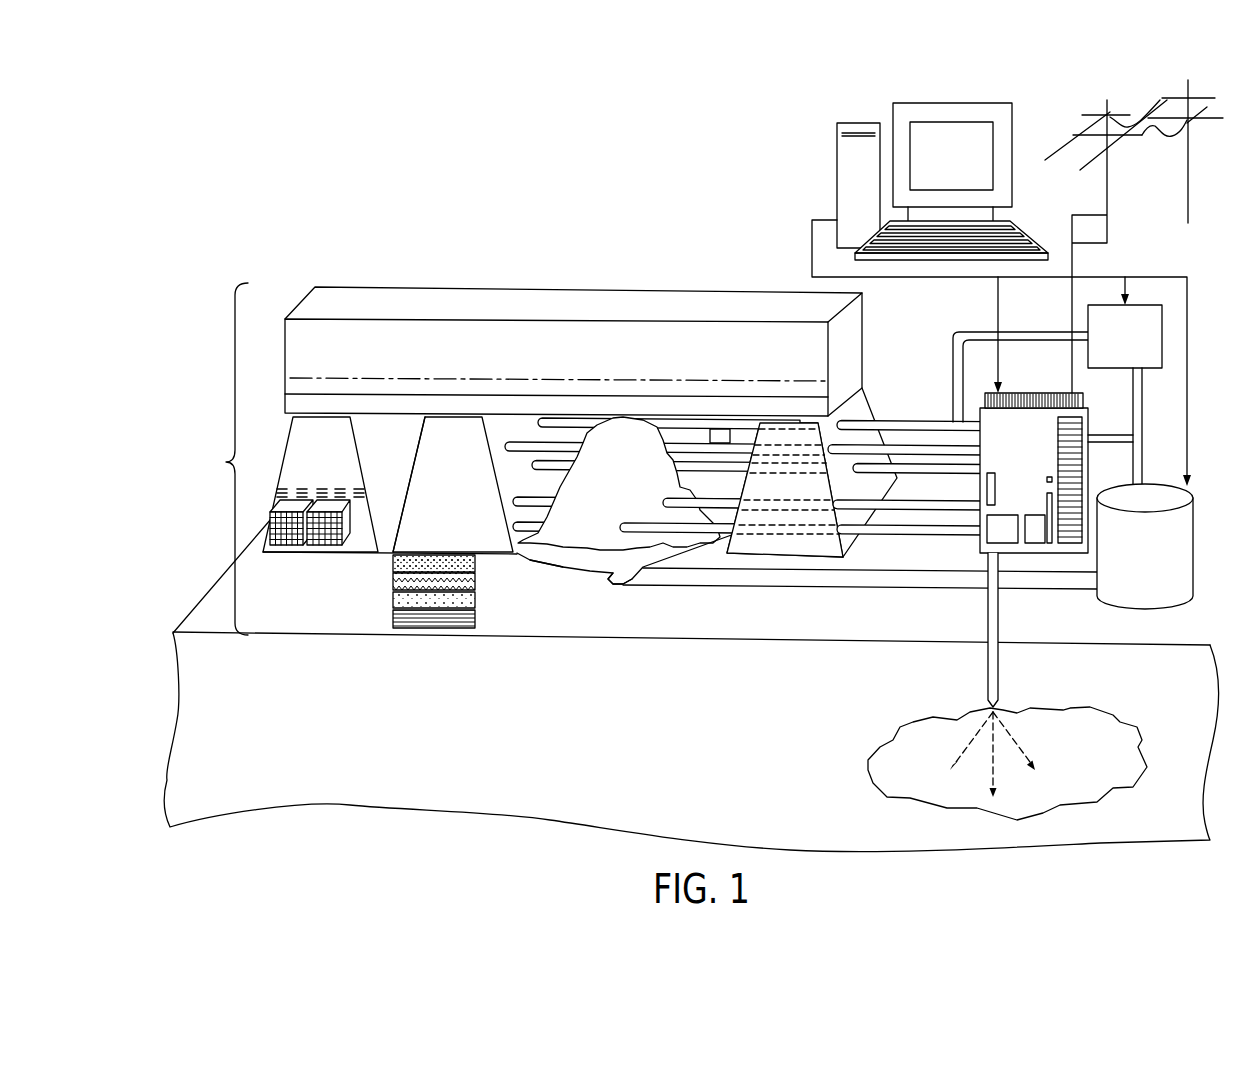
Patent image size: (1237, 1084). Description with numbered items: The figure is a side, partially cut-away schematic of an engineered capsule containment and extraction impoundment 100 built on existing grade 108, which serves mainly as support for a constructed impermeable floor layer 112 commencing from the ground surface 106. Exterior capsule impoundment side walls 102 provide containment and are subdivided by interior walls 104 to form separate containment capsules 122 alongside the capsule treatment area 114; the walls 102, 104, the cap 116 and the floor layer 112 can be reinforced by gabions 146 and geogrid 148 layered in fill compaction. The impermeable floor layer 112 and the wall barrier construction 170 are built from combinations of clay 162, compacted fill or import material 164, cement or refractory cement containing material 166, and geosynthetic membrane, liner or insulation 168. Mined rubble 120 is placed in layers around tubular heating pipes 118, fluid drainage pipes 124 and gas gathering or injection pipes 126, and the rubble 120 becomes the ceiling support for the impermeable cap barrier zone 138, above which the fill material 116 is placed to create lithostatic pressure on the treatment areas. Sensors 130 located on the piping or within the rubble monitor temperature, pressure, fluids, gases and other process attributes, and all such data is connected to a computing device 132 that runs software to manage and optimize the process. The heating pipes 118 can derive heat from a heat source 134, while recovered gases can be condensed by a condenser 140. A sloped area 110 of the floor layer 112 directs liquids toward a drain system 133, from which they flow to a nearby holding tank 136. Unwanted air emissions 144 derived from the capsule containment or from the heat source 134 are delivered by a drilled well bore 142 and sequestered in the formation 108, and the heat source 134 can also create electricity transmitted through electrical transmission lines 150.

The engineered capsule containment and extraction impoundment 100 is at (220, 459).
The exterior capsule impoundment side walls 102 is at (334, 478).
The interior walls 104 is at (465, 491).
The ground surface 106 is at (197, 630).
The existing grade 108 is at (700, 738).
The sloped area 110 is at (532, 560).
The impermeable floor layer 112 is at (415, 610).
The capsule treatment area 114 is at (587, 560).
The cap 116 is at (571, 371).
The tubular heating pipes 118 is at (898, 503).
The mined rubble 120 is at (565, 545).
The separate containment capsules 122 is at (400, 458).
The fluid drainage pipes 124 is at (840, 590).
The gas gathering or injection pipes 126 is at (918, 423).
The sensors 130 is at (720, 432).
The computing device 132 is at (842, 186).
The drain system 133 is at (633, 570).
The heat source 134 is at (1033, 392).
The holding tank 136 is at (1159, 571).
The impermeable cap barrier zone 138 is at (283, 376).
The condenser 140 is at (1139, 349).
The drilled well bore 142 is at (990, 668).
The unwanted air emissions 144 is at (1123, 722).
The gabions 146 is at (285, 541).
The geogrid 148 is at (285, 489).
The electrical transmission lines 150 is at (1142, 183).
The clay 162 is at (393, 562).
The compacted fill or import material 164 is at (475, 585).
The cement or refractory cement containing material 166 is at (393, 600).
The geo synthetic membrane, liner or insulation 168 is at (475, 623).
The wall barrier construction 170 is at (402, 514).